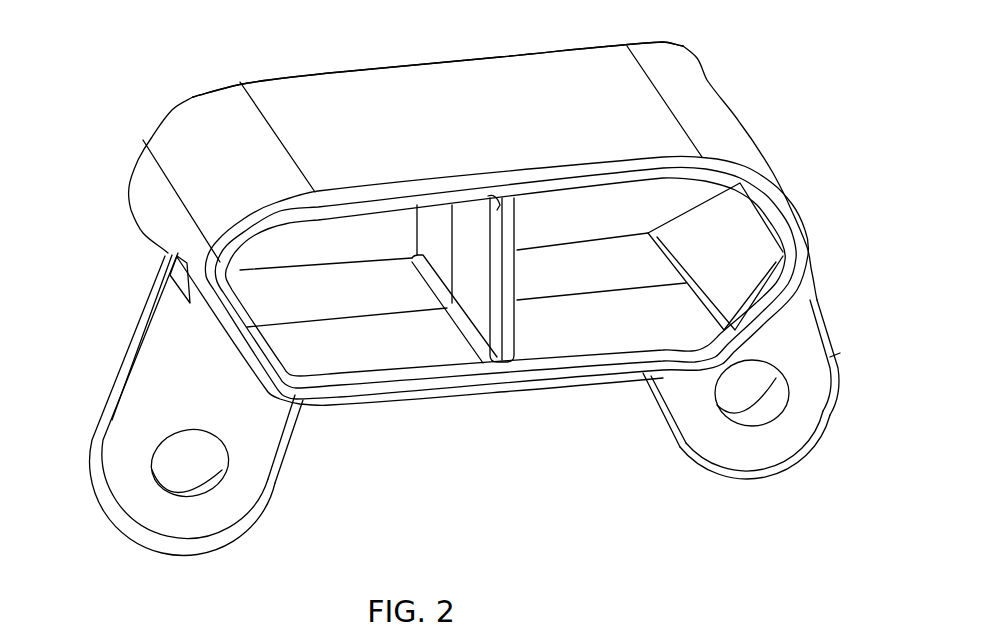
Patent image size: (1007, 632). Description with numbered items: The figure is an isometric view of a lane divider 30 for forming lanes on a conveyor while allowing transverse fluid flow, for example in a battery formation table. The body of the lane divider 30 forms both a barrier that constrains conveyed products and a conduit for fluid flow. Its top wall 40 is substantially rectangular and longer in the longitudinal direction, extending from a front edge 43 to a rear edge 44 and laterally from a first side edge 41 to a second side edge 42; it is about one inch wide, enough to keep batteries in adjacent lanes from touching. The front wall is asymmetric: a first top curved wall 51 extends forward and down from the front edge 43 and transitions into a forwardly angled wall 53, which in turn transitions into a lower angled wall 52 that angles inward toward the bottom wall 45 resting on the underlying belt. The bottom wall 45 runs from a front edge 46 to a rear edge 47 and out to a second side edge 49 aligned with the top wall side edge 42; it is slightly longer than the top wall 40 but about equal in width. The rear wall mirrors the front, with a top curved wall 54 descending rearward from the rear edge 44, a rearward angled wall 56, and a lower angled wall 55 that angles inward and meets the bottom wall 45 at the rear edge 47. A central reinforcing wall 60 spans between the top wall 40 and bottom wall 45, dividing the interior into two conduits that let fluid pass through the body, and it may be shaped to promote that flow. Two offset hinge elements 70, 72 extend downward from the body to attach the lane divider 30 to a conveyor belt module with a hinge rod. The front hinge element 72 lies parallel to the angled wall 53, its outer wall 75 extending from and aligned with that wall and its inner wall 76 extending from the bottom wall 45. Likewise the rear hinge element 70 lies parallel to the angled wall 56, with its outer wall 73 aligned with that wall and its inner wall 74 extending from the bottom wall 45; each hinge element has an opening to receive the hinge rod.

The lane divider 30 is at (280, 55).
The top wall 40 is at (472, 87).
The first side edge 41 is at (407, 62).
The second side edge 42 is at (438, 193).
The front edge 43 is at (617, 46).
The rear edge 44 is at (253, 100).
The bottom wall 45 is at (562, 328).
The front edge 46 is at (693, 307).
The rear edge 47 is at (290, 375).
The second side edge 49 is at (370, 400).
The first top curved wall 51 is at (690, 93).
The lower angled wall 52 is at (778, 284).
The forwardly angled wall 53 is at (806, 227).
The top curved wall 54 is at (175, 128).
The lower angled wall 55 is at (143, 233).
The rearward angled wall 56 is at (148, 185).
The central reinforcing wall 60 is at (497, 227).
The rear hinge element 70 is at (137, 493).
The front hinge element 72 is at (803, 428).
The rear outer wall 73 is at (103, 403).
The forward inner wall 74 is at (277, 473).
The front outer wall 75 is at (837, 343).
The rear inner wall 76 is at (652, 404).